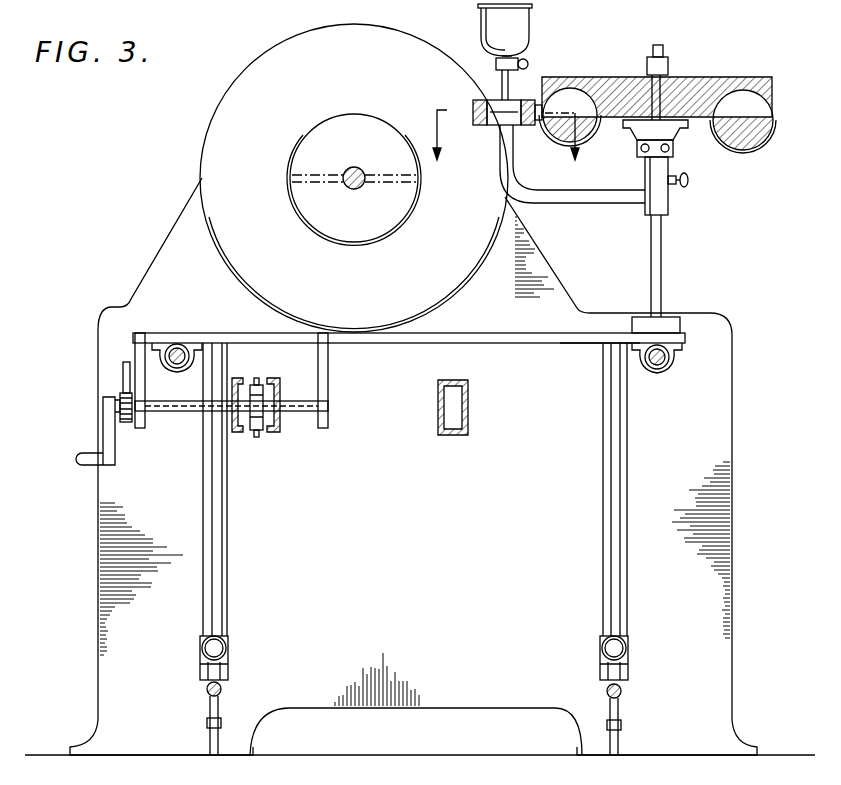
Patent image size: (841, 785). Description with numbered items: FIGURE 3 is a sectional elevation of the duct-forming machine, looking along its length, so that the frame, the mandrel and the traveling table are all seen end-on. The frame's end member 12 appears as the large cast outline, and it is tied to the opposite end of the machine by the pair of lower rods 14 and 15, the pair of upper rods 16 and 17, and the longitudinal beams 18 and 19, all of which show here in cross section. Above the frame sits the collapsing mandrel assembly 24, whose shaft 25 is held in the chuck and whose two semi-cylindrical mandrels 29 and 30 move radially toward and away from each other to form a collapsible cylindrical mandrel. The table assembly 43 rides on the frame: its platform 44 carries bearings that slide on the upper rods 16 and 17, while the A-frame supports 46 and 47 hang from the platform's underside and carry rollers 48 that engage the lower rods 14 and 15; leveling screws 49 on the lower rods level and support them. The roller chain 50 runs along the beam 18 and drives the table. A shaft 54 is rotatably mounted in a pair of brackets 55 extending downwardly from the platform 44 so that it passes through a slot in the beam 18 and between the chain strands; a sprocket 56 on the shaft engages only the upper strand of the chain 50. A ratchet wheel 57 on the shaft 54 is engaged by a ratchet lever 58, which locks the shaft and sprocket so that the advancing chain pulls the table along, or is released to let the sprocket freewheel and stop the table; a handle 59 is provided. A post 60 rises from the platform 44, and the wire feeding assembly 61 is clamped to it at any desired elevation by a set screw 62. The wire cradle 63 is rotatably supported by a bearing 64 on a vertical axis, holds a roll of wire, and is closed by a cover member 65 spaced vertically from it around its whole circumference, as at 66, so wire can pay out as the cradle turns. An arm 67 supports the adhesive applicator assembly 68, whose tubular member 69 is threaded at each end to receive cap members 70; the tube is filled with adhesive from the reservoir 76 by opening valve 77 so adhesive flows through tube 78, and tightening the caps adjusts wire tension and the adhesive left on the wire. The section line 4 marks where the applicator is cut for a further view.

The end member 12 is at (420, 466).
The lower rod 14 is at (206, 690).
The lower rod 15 is at (606, 691).
The upper rod 16 is at (177, 344).
The upper rod 17 is at (663, 365).
The longitudinal beam 18 is at (268, 430).
The longitudinal beam 19 is at (470, 416).
The collapsing mandrel assembly 24 is at (405, 206).
The shaft 25 is at (344, 170).
The semi-cylindrical mandrel 29 is at (380, 126).
The semi-cylindrical mandrel 30 is at (345, 240).
The section line 4- 4 is at (507, 146).
The table assembly 43 is at (493, 325).
The platform 44 is at (568, 341).
The A-frame support 46 is at (222, 565).
The A-frame support 47 is at (603, 590).
The roller 48 is at (216, 677).
The leveling screw 49 is at (206, 722).
The roller chain 50 is at (256, 433).
The shaft 54 is at (266, 408).
The bracket 55 is at (329, 386).
The sprocket 56 is at (259, 419).
The ratchet wheel 57 is at (125, 425).
The ratchet lever 58 is at (123, 372).
The handle 59 is at (100, 452).
The post 60 is at (662, 260).
The wire feeding assembly 61 is at (668, 200).
The set screw 62 is at (690, 183).
The wire cradle 63 is at (774, 128).
The bearing 64 is at (675, 152).
The cover member 65 is at (720, 76).
The vertical space 66 is at (773, 108).
The arm 67 is at (580, 198).
The adhesive applicator assembly 68 is at (545, 99).
The tubular member 69 is at (503, 114).
The cap member 70 is at (480, 108).
The reservoir 76 is at (510, 16).
The valve 77 is at (512, 62).
The tube 78 is at (500, 82).